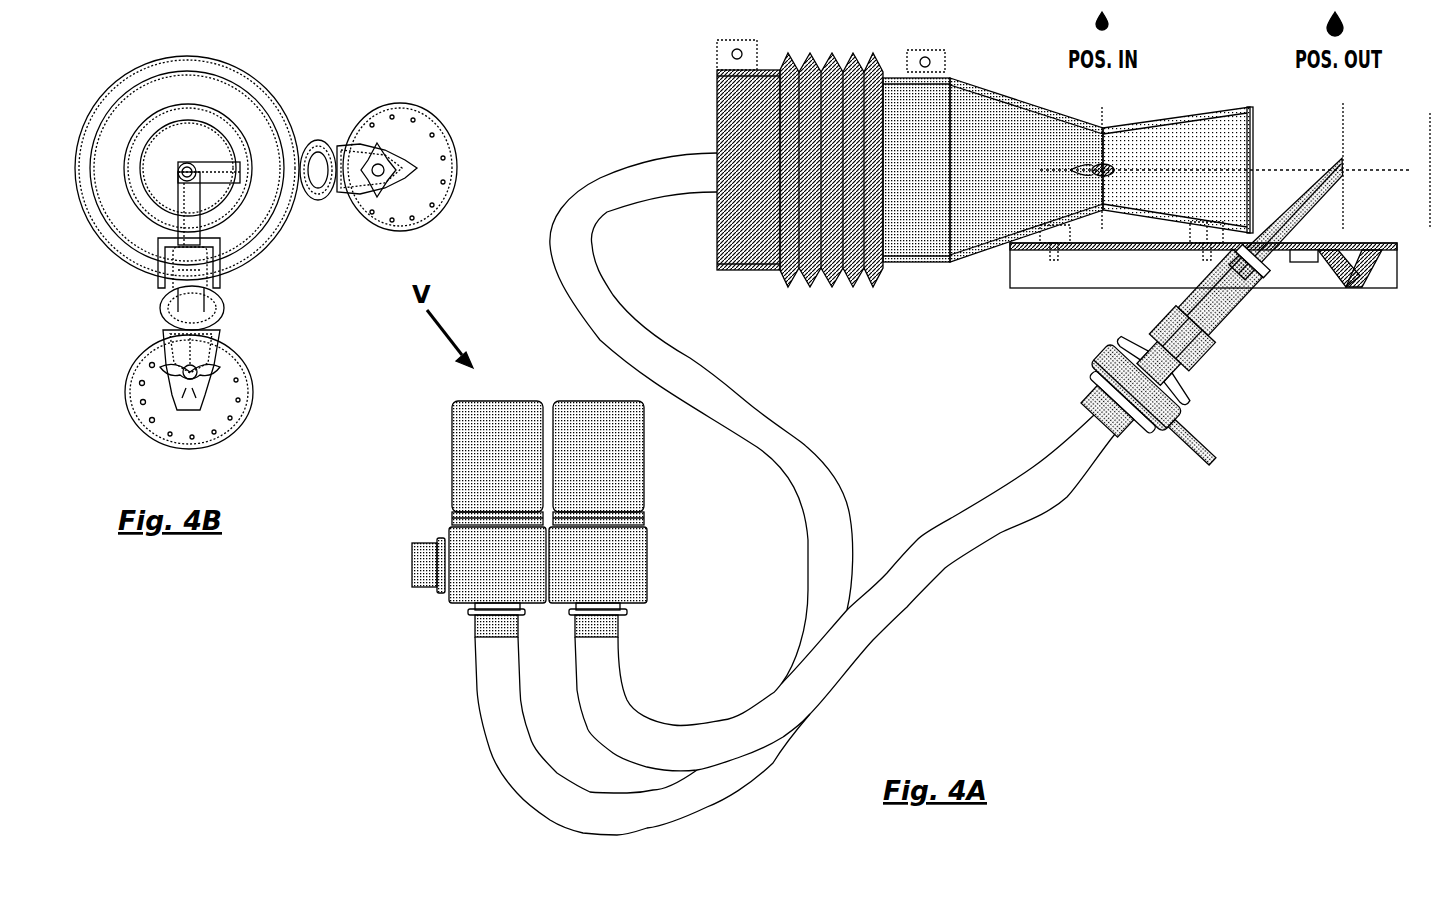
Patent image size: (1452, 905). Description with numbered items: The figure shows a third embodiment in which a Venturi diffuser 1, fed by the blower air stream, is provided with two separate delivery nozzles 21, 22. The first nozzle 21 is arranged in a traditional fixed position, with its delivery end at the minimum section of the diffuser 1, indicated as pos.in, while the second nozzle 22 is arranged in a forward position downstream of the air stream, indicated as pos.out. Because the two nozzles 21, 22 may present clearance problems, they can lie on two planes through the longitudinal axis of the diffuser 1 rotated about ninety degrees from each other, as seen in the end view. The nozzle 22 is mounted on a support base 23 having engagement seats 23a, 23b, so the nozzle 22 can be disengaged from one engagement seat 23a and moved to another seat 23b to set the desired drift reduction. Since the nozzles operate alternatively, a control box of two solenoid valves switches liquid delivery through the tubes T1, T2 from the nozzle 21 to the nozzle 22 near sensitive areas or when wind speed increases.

In FIG. 4A, the diffuser 1 is at (989, 97).
In FIG. 4B, the first nozzle 21 is at (213, 168).
In FIG. 4A, the first nozzle 21 is at (1083, 170).
In FIG. 4B, the second nozzle 22 is at (192, 218).
In FIG. 4A, the second nozzle 22 is at (1223, 297).
In FIG. 4A, the support base 23 is at (1100, 248).
In FIG. 4A, the engagement seat 23a is at (1290, 253).
In FIG. 4A, the engagement seat 23b is at (1374, 262).
In FIG. 4A, the tube T1 is at (932, 557).
In FIG. 4A, the tube T2 is at (758, 447).